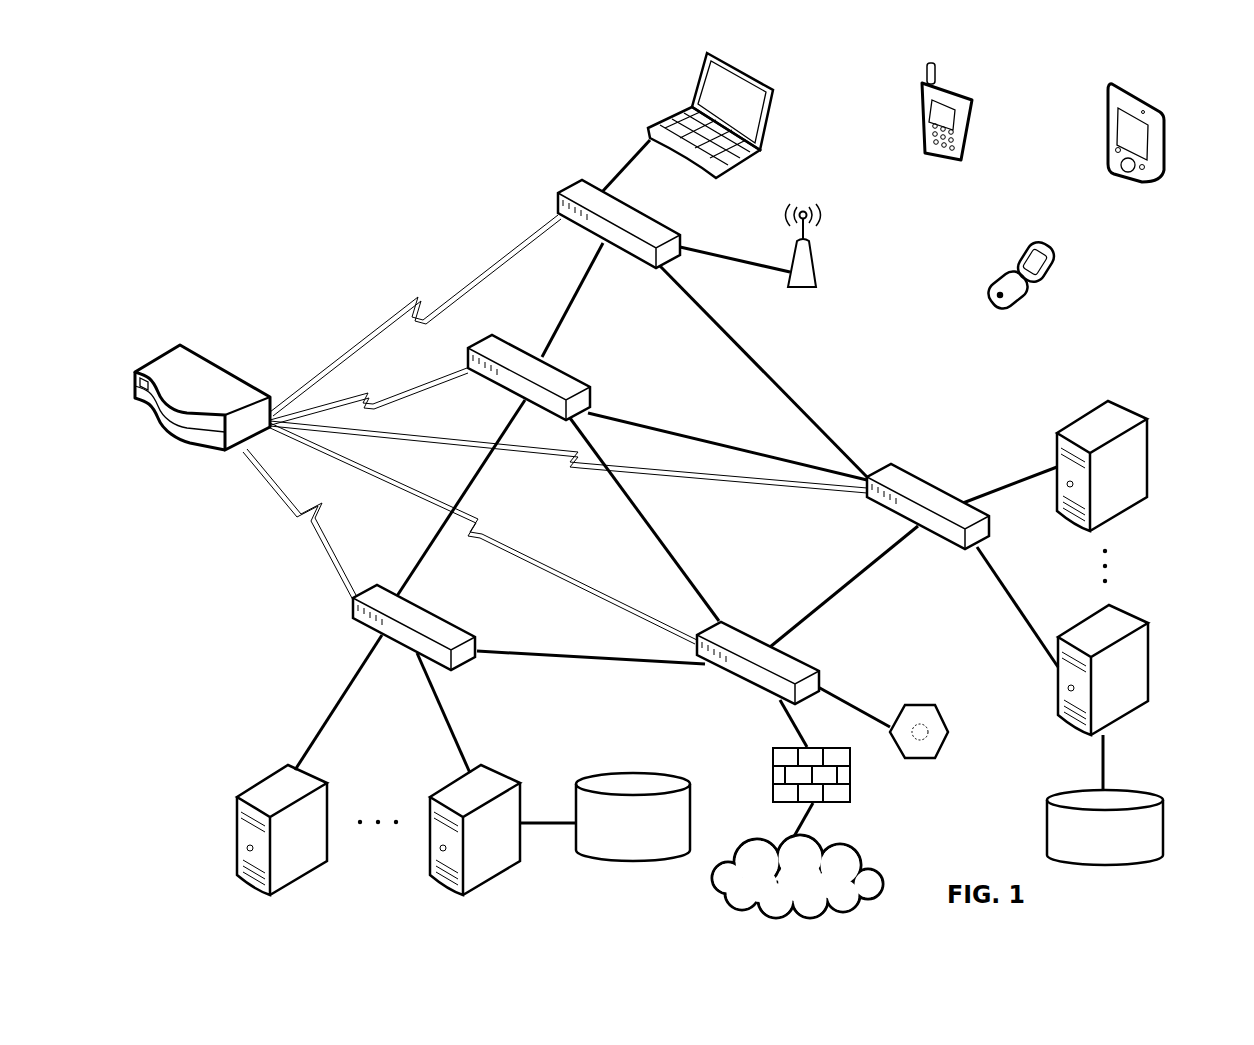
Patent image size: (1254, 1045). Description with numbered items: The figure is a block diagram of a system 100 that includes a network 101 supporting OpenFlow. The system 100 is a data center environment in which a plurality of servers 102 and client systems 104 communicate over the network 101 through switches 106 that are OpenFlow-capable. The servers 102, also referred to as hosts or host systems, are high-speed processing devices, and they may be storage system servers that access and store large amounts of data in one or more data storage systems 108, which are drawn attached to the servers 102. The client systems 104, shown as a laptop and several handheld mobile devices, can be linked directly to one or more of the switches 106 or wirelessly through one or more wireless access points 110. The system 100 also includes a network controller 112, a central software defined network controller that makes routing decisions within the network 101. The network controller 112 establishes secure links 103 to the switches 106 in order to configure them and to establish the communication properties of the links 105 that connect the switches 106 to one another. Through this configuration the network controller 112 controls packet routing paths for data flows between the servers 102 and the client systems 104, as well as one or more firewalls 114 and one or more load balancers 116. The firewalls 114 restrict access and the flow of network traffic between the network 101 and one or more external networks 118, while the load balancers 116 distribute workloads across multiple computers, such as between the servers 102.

The system 100 is at (193, 111).
The network 101 is at (466, 198).
The servers 102 is at (1135, 407).
The secure links 103 is at (400, 302).
The client systems 104 is at (760, 78).
The links 105 is at (590, 270).
The switches 106 is at (680, 233).
The data storage systems 108 is at (617, 835).
The wireless access points 110 is at (822, 260).
The network controller 112 is at (190, 352).
The firewalls 114 is at (772, 750).
The load balancers 116 is at (918, 705).
The external networks 118 is at (781, 889).